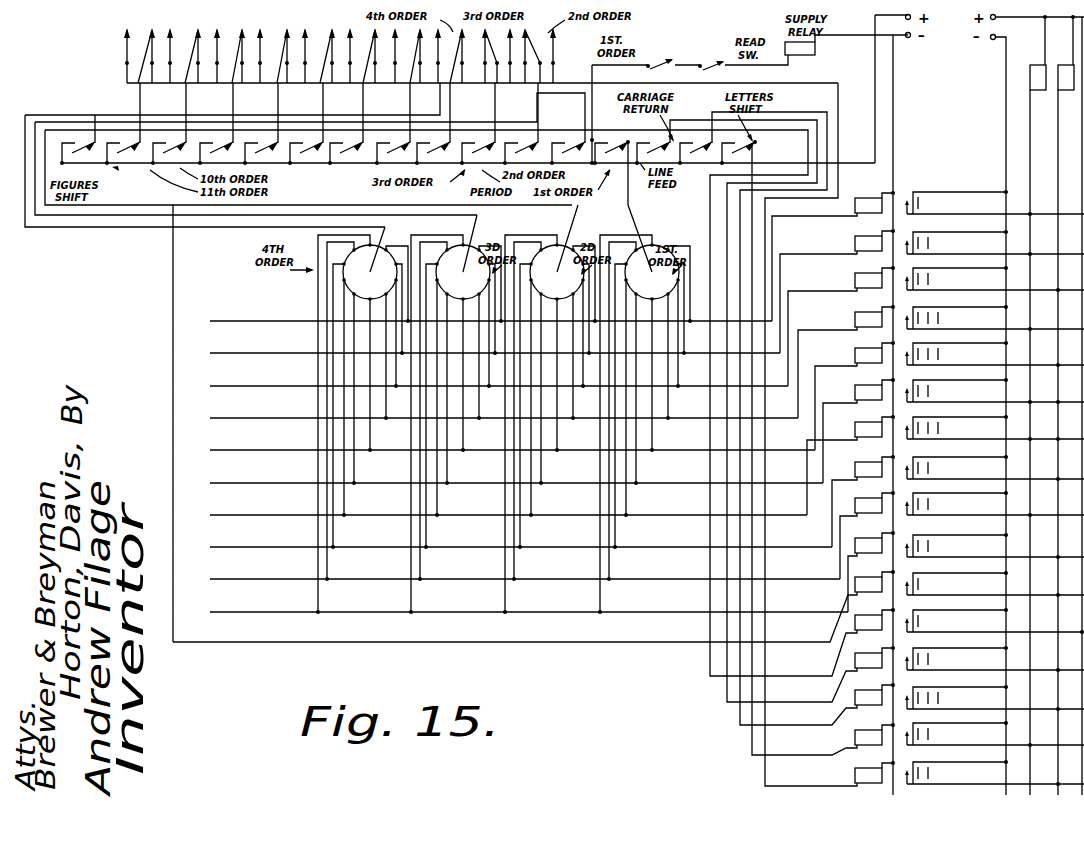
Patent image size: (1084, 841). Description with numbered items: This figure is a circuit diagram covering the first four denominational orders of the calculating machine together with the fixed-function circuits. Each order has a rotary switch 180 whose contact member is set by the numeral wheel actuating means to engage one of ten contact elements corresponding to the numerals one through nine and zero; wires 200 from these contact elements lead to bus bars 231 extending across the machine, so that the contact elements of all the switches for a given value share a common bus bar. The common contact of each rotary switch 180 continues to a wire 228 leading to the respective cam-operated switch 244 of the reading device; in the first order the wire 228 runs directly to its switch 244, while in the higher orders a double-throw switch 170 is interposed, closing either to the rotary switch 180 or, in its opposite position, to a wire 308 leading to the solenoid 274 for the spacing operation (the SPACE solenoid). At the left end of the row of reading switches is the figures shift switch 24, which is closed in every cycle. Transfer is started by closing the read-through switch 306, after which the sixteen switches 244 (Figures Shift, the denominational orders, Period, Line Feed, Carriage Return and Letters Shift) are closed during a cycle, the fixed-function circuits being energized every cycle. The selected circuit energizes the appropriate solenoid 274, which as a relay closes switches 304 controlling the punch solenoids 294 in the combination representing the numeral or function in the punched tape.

The switch 170 is at (654, 62).
The rotary switch 180 is at (445, 247).
The wire 308 is at (288, 85).
The read-through switch 306 is at (717, 62).
The figures shift switch 24 is at (112, 168).
The switch 244 is at (312, 164).
The wire 228 is at (629, 207).
The bus bar 231 is at (260, 545).
The wire 200 is at (525, 528).
The solenoid 274 is at (854, 225).
The switch 304 is at (933, 242).
The punch solenoid 294 is at (1068, 63).